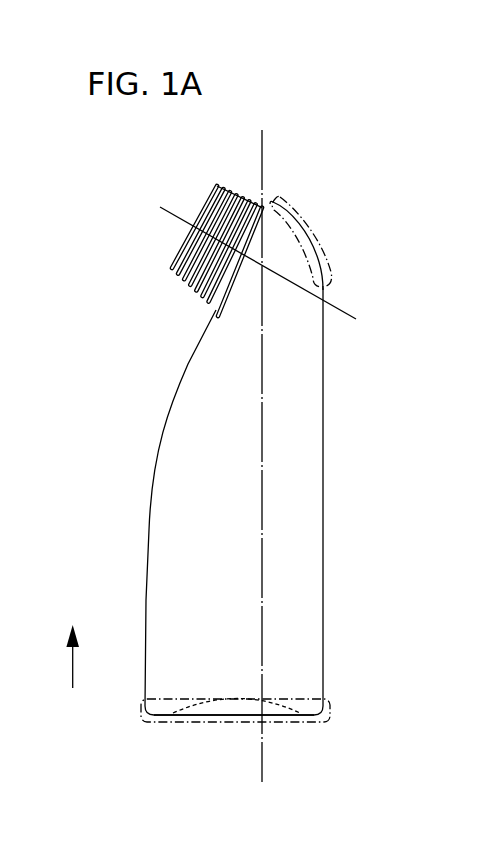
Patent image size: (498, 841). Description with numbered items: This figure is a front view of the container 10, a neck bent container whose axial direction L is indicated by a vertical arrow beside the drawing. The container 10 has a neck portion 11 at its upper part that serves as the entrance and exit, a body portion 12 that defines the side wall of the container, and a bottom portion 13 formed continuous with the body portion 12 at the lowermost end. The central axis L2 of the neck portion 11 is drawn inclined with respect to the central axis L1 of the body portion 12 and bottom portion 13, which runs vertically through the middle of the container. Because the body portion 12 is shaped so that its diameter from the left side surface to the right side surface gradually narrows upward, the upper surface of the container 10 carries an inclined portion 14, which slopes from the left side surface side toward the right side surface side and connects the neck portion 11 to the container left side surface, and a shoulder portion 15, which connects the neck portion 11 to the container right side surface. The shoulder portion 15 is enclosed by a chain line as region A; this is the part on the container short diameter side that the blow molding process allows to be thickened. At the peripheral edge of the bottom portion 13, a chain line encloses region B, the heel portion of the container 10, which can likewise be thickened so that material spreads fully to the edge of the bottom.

The container 10 is at (345, 147).
The neck portion 11 is at (221, 185).
The body portion 12 is at (170, 531).
The bottom portion 13 is at (278, 717).
The inclined portion 14 is at (188, 367).
The shoulder portion 15 is at (296, 211).
The region A is at (332, 254).
The region B is at (325, 700).
The axial direction L is at (62, 664).
The central axis L1 is at (260, 750).
The central axis L2 is at (338, 306).